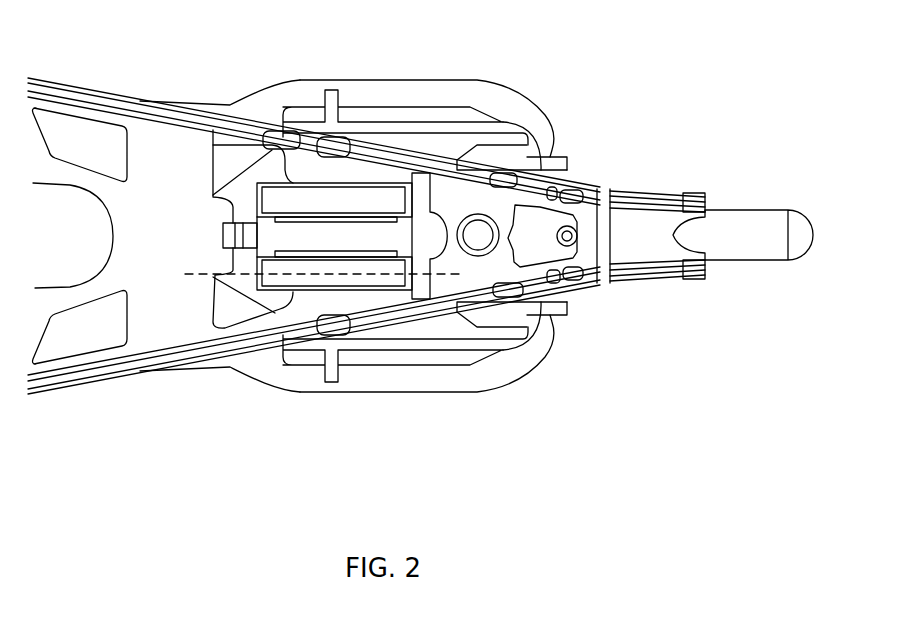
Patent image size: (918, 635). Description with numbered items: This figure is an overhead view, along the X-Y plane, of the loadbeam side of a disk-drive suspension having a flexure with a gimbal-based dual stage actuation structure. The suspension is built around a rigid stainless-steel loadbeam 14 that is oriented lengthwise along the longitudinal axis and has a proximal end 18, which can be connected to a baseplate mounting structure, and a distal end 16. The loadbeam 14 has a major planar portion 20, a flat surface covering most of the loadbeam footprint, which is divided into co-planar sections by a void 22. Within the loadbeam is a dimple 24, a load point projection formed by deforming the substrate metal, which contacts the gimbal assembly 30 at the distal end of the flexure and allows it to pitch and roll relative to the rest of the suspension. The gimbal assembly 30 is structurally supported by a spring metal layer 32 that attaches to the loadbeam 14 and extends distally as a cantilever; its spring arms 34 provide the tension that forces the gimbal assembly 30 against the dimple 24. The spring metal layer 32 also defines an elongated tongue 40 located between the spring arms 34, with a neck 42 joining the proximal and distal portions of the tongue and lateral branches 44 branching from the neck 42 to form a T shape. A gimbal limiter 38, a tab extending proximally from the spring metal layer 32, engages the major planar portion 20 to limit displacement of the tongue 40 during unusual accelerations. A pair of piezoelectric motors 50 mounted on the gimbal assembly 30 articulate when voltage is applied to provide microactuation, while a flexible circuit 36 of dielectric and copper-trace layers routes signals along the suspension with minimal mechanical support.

The loadbeam 14 is at (102, 92).
The distal end 16 is at (684, 200).
The proximal end 18 is at (43, 90).
The major planar portion 20 is at (168, 205).
The void 22 is at (216, 308).
The dimple 24 is at (483, 235).
The gimbal assembly 30 is at (495, 420).
The spring metal layer 32 is at (548, 337).
The spring arms 34 is at (503, 121).
The flexible circuit 36 is at (397, 93).
The gimbal limiter 38 is at (227, 237).
The tongue 40 is at (537, 232).
The neck 42 is at (337, 237).
The lateral branches 44 is at (258, 200).
The motors 50 is at (276, 192).